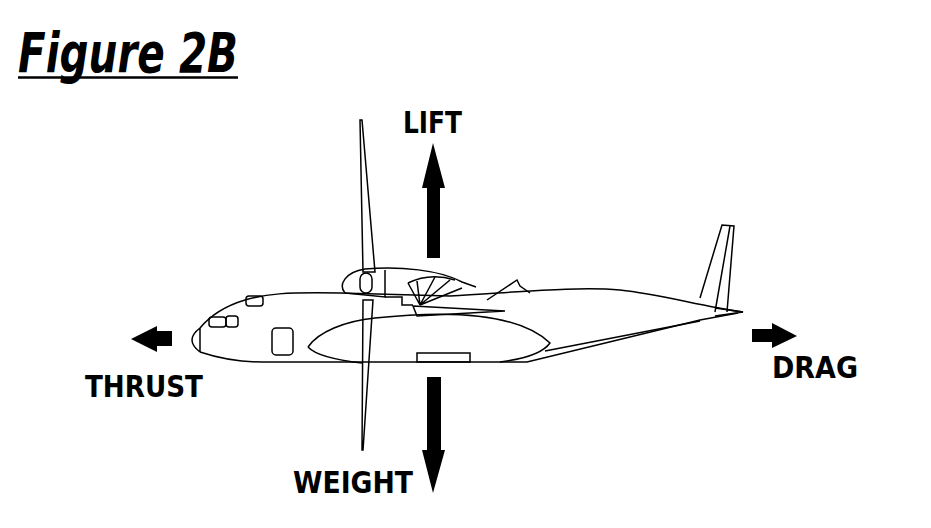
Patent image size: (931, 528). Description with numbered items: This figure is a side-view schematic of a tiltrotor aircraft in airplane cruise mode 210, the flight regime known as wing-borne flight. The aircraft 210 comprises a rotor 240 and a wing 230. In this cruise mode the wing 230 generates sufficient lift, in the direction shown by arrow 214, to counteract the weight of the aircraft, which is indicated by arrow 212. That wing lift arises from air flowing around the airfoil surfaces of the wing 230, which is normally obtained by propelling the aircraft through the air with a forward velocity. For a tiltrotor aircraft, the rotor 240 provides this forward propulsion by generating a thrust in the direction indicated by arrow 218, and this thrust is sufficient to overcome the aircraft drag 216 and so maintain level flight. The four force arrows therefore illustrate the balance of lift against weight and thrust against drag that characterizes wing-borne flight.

The tiltrotor aircraft in airplane cruise mode 210 is at (644, 273).
The weight arrow 212 is at (442, 400).
The lift arrow 214 is at (438, 217).
The aircraft drag 216 is at (777, 328).
The thrust arrow 218 is at (148, 334).
The wing 230 is at (493, 297).
The rotor 240 is at (360, 197).